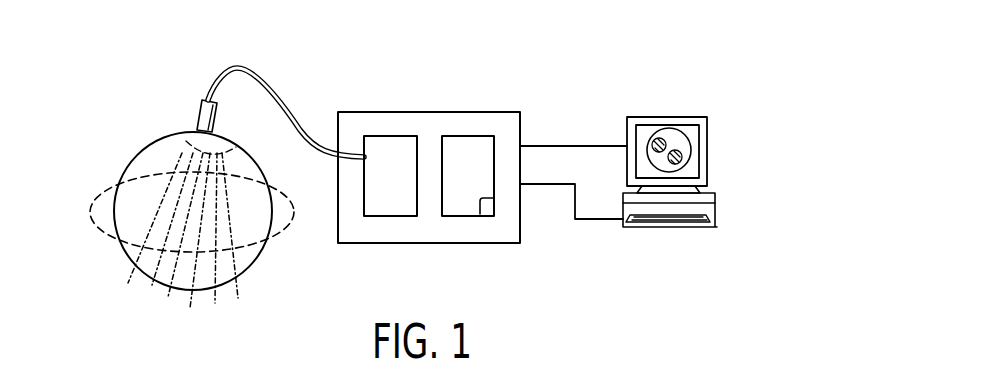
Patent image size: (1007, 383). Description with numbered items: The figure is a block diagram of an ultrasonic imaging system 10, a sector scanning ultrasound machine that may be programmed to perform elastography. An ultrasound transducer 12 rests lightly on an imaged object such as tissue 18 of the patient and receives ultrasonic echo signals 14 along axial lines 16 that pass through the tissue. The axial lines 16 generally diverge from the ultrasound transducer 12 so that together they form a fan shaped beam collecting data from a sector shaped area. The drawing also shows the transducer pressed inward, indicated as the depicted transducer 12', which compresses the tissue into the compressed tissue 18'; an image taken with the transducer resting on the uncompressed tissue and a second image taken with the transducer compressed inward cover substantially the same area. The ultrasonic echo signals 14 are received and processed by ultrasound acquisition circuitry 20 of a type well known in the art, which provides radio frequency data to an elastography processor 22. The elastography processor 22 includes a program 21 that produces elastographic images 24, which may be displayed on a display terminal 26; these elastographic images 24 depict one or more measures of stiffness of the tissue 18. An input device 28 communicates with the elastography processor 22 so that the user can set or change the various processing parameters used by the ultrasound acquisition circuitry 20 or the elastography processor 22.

The ultrasonic imaging system 10 is at (603, 43).
The ultrasound transducer 12 is at (265, 105).
The depicted transducer 12' is at (247, 117).
The ultrasonic echo signals 14 is at (154, 218).
The axial lines 16 is at (165, 305).
The tissue 18 is at (178, 199).
The compressed tissue 18' is at (203, 231).
The ultrasound acquisition circuitry 20 is at (403, 186).
The program 21 is at (481, 207).
The elastography processor 22 is at (481, 186).
The elastographic images 24 is at (680, 143).
The display terminal 26 is at (667, 117).
The input device 28 is at (668, 229).